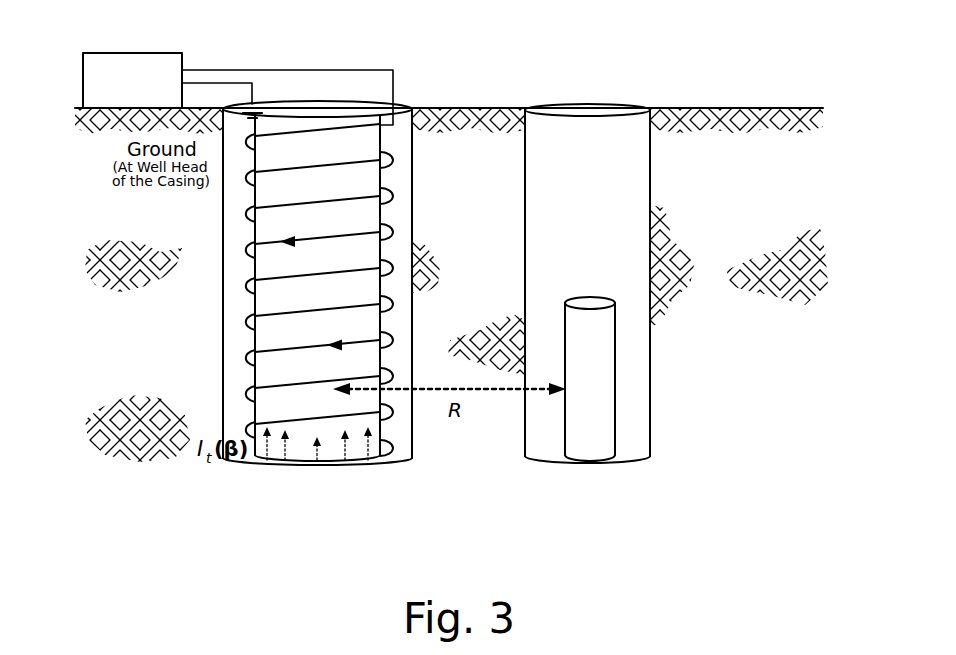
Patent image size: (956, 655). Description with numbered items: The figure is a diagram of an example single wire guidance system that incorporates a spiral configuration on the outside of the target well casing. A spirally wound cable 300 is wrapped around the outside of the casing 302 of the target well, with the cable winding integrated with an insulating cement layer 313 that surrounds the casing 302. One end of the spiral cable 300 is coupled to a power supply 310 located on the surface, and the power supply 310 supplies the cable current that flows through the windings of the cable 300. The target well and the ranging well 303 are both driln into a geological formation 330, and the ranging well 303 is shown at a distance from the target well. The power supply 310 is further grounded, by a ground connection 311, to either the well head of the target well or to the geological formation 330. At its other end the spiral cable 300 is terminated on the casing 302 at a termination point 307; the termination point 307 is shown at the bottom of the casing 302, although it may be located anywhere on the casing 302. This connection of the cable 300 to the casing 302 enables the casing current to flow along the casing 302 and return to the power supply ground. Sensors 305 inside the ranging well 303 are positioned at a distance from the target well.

The spirally wound cable 300 is at (357, 70).
The casing 302 is at (350, 283).
The ranging well 303 is at (625, 105).
The sensors 305 is at (614, 438).
The termination point 307 is at (322, 462).
The power supply 310 is at (133, 52).
The electrical connection (battery/ground) 311 is at (242, 104).
The insulating cement layer 313 is at (405, 120).
The geological formation 330 is at (775, 115).